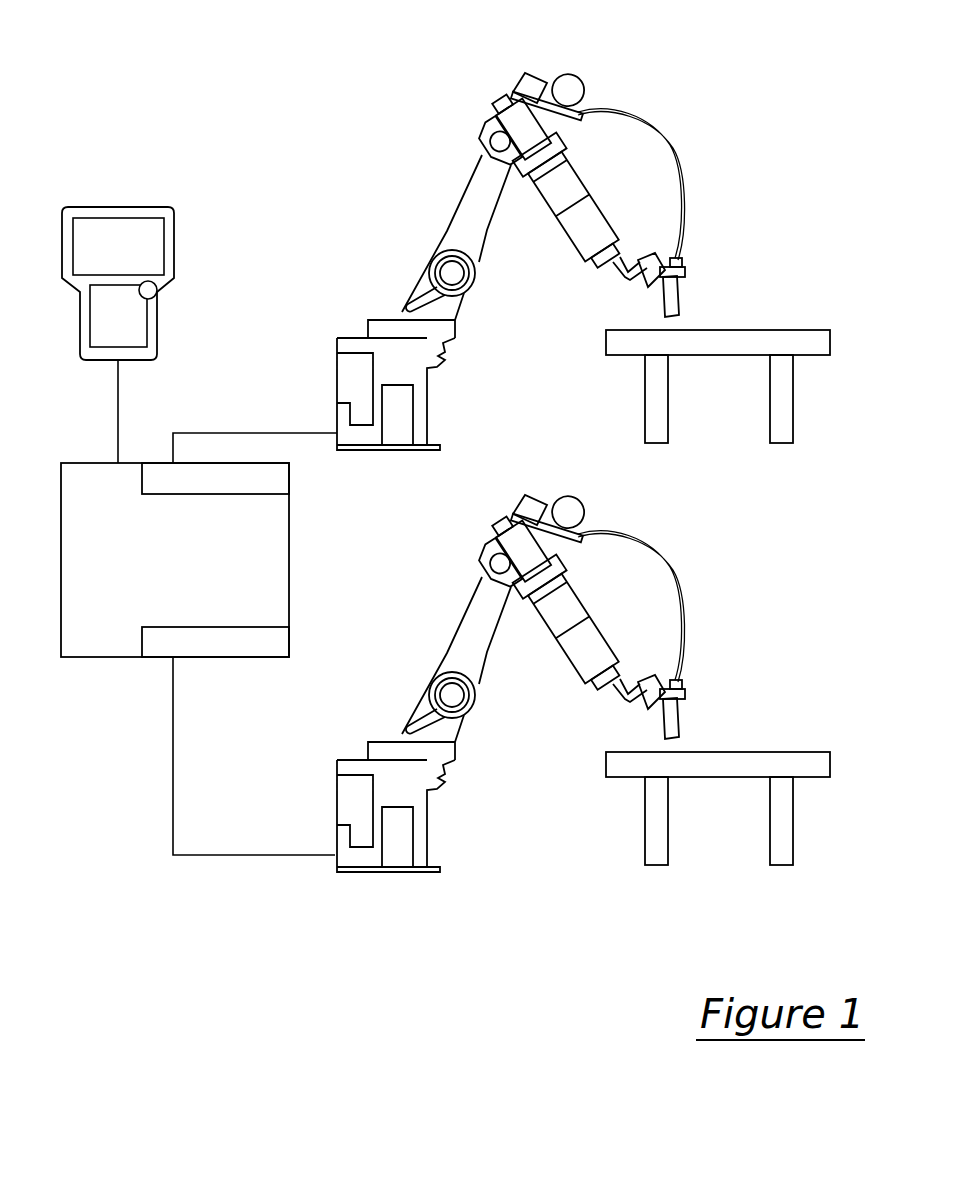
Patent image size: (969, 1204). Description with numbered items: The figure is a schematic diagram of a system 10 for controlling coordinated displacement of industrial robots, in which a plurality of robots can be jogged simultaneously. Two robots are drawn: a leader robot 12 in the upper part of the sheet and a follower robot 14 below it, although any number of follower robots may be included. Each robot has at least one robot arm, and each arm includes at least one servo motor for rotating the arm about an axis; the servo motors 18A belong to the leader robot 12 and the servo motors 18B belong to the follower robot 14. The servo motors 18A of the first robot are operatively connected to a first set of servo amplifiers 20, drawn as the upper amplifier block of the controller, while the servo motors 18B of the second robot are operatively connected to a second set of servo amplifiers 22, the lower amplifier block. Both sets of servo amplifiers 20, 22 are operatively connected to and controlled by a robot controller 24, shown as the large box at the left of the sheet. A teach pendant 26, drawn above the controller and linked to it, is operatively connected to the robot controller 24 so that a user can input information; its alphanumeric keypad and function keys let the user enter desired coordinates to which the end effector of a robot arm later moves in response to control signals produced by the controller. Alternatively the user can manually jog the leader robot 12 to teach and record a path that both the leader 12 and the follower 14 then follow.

The system 10 is at (337, 108).
The leader robot 12 is at (583, 232).
The follower robot 14 is at (583, 659).
The servo motor 18A is at (499, 105).
The servo motor 18B is at (496, 611).
The first set of servo amplifiers 20 is at (290, 478).
The second set of servo amplifiers 22 is at (290, 642).
The robot controller 24 is at (60, 558).
The teach pendant 26 is at (117, 207).